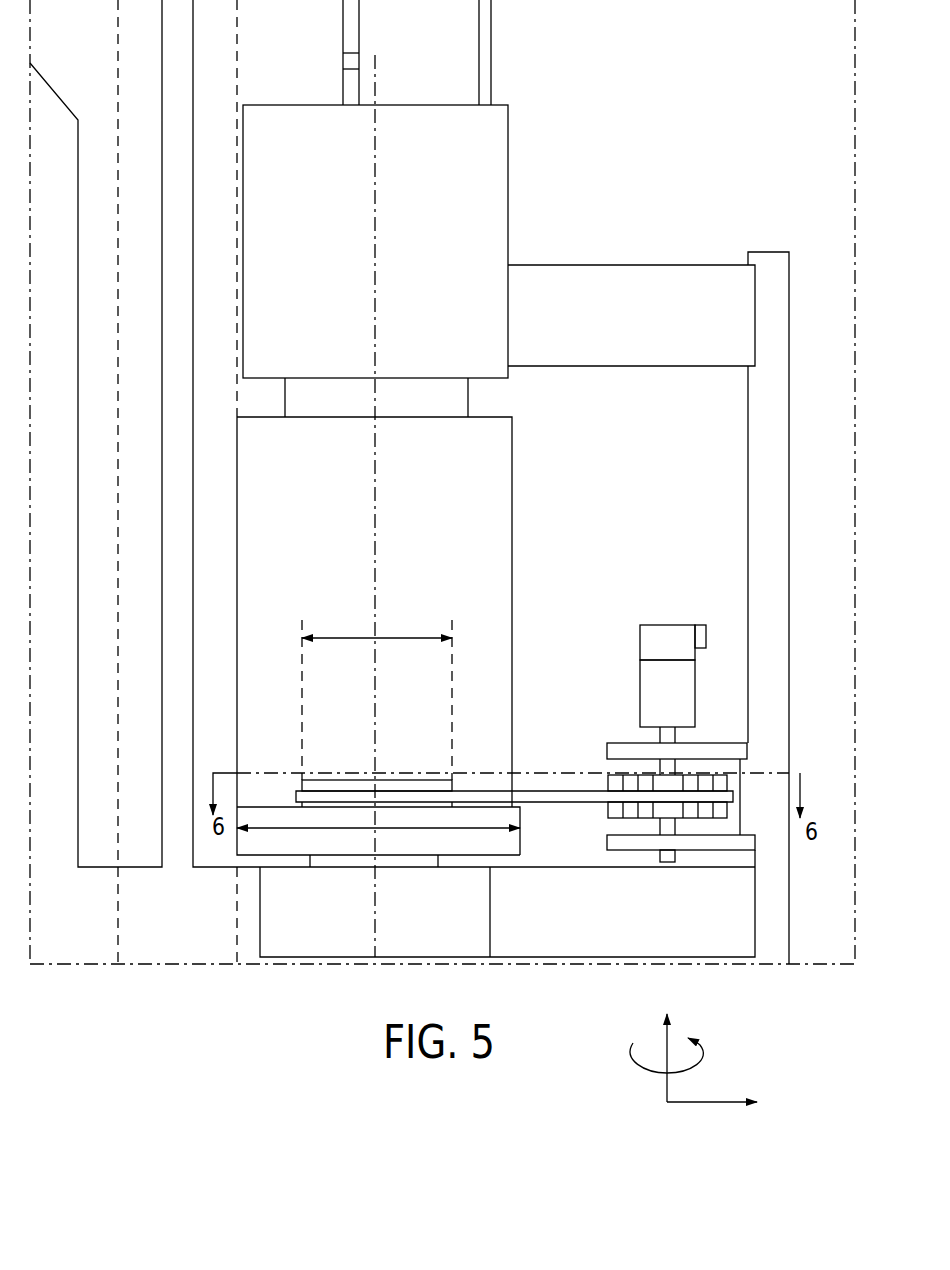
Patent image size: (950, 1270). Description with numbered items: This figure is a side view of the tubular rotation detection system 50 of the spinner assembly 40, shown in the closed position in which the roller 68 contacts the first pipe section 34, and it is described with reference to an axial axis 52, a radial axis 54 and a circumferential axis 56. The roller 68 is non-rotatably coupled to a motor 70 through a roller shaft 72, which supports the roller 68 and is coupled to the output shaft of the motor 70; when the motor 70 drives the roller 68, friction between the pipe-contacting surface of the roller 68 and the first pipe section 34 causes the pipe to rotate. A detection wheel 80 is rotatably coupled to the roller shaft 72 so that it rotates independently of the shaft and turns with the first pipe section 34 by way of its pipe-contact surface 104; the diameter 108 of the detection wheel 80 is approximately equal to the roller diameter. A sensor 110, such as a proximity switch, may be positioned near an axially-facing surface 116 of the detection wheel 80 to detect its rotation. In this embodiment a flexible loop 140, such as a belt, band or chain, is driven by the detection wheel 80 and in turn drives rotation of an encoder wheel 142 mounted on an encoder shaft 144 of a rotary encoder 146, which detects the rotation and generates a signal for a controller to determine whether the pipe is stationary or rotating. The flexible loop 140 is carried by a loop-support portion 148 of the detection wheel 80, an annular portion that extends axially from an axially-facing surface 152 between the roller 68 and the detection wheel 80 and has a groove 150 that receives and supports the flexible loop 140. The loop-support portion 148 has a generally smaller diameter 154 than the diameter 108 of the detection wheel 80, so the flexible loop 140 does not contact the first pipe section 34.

The first pipe section 34 is at (238, 42).
The spinner assembly 40 is at (553, 108).
The tubular rotation detection system 50 is at (541, 434).
The axial axis 52 is at (667, 1080).
The radial axis 54 is at (705, 1105).
The circumferential axis 56 is at (707, 1062).
The roller 68 is at (496, 478).
The motor 70 is at (496, 176).
The roller shaft 72 is at (457, 403).
The detection wheel 80 is at (293, 848).
The pipe-contact surface 104 is at (237, 845).
The diameter 108 is at (397, 830).
The sensor 110 is at (705, 616).
The axially-facing surface 116 is at (475, 857).
The flexible loop 140 is at (553, 802).
The encoder wheel 142 is at (605, 783).
The encoder shaft 144 is at (677, 737).
The rotary encoder 146 is at (646, 682).
The loop-support portion 148 is at (343, 783).
The groove 150 is at (444, 788).
The axially-facing surface 152 is at (272, 807).
The diameter 154 is at (393, 637).